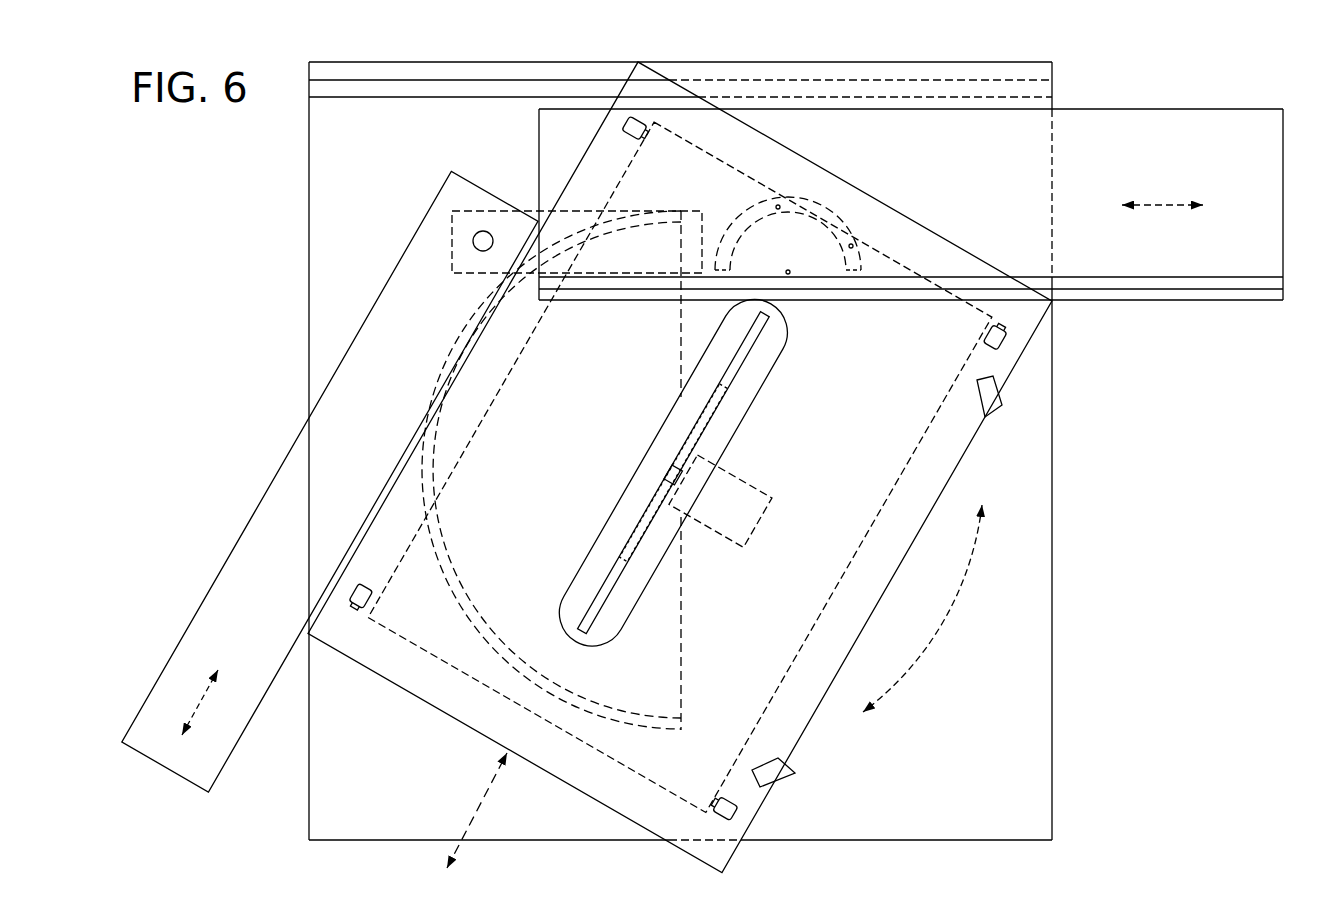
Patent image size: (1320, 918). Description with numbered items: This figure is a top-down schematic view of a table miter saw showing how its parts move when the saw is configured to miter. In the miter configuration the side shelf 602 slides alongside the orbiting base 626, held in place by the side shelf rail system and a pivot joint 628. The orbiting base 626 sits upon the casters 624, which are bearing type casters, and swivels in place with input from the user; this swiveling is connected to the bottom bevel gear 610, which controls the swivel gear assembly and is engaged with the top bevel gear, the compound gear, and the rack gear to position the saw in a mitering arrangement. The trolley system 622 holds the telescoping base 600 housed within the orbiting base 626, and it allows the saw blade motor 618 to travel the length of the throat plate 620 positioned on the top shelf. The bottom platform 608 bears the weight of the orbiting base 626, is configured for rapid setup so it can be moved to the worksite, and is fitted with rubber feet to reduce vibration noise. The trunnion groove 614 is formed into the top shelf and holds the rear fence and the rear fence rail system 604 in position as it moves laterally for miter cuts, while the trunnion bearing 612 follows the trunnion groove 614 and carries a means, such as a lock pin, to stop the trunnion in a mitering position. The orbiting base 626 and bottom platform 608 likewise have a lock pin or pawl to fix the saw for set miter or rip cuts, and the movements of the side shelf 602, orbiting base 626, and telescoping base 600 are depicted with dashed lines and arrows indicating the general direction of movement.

The telescoping base 600 is at (680, 467).
The side shelf 602 is at (330, 519).
The rear fence rail system 604 is at (911, 204).
The bottom platform 608 is at (680, 451).
The bottom bevel gear 610 is at (551, 470).
The trunnion bearing 612 is at (788, 239).
The trunnion groove 614 is at (757, 207).
The saw blade motor 618 is at (713, 496).
The throat plate 620 is at (632, 583).
The trolley system 622 is at (630, 116).
The casters 624 is at (1002, 402).
The orbiting base 626 is at (940, 465).
The pivot joint 628 is at (477, 236).